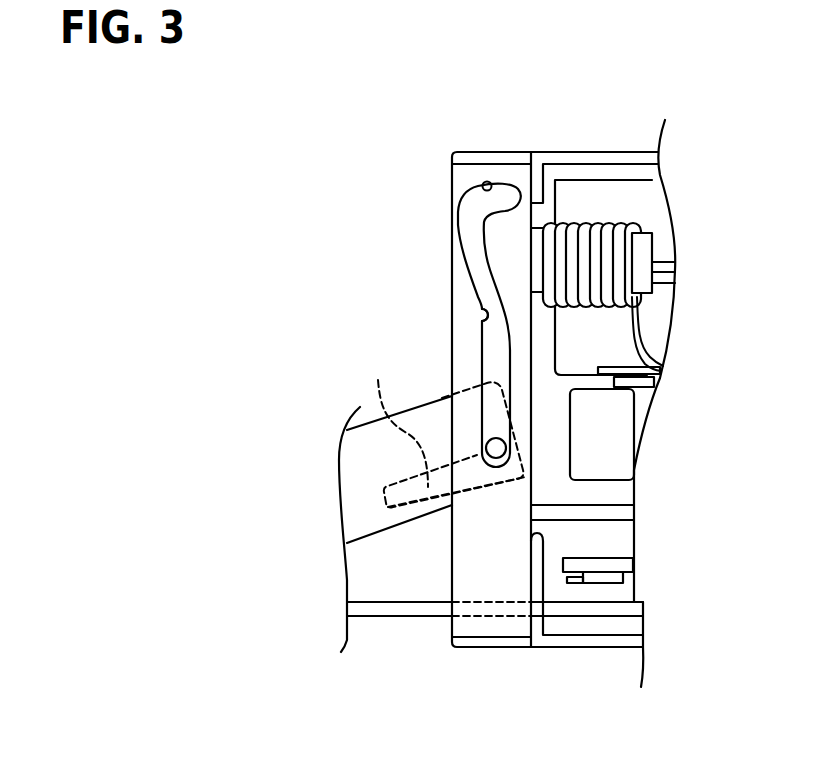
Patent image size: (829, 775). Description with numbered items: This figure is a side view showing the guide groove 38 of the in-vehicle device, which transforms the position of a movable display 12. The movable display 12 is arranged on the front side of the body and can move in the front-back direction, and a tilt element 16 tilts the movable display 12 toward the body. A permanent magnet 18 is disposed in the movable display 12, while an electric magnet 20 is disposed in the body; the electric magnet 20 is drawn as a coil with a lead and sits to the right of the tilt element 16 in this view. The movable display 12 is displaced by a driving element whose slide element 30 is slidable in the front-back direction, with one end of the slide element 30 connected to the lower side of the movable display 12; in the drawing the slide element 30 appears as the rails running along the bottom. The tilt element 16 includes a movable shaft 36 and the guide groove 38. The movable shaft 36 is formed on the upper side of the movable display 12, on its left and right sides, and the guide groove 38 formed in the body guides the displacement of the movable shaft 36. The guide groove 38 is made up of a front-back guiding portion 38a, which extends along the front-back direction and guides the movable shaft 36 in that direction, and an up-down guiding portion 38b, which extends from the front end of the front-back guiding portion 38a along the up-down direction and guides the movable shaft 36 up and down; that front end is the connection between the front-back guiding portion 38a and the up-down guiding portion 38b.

The movable display 12 is at (360, 467).
The tilt element 16 is at (467, 287).
The permanent magnet 18 is at (398, 419).
The electric magnet 20 is at (638, 262).
The slide element 30 is at (402, 613).
The movable shaft 36 is at (499, 457).
The guide groove 38 is at (426, 260).
The front-back guiding portion 38a is at (485, 184).
The up-down guiding portion 38b is at (482, 322).